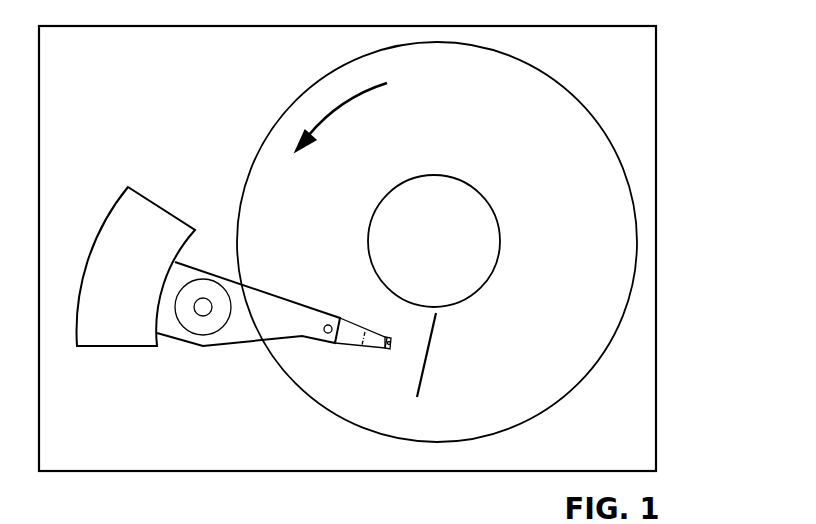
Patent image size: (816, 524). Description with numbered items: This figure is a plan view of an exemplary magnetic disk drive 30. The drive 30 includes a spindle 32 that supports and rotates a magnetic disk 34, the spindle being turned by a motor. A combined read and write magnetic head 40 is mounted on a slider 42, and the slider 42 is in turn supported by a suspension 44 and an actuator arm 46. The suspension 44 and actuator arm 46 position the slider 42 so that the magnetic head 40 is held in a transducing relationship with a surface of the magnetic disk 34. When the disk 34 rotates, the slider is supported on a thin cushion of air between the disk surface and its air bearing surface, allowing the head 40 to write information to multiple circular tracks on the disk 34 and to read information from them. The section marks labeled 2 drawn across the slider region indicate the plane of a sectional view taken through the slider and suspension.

The magnetic disk drive 30 is at (672, 63).
The spindle 32 is at (470, 183).
The magnetic disk 34 is at (552, 264).
The magnetic head 40 is at (392, 347).
The slider 42 is at (388, 337).
The suspension 44 is at (350, 345).
The actuator arm 46 is at (260, 283).
The section line 2- 2 is at (436, 322).